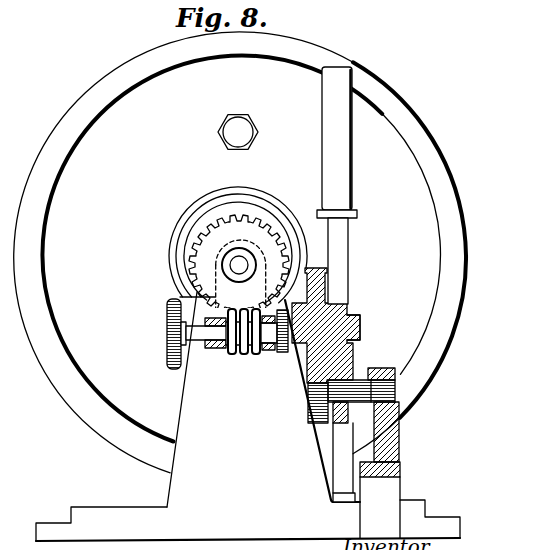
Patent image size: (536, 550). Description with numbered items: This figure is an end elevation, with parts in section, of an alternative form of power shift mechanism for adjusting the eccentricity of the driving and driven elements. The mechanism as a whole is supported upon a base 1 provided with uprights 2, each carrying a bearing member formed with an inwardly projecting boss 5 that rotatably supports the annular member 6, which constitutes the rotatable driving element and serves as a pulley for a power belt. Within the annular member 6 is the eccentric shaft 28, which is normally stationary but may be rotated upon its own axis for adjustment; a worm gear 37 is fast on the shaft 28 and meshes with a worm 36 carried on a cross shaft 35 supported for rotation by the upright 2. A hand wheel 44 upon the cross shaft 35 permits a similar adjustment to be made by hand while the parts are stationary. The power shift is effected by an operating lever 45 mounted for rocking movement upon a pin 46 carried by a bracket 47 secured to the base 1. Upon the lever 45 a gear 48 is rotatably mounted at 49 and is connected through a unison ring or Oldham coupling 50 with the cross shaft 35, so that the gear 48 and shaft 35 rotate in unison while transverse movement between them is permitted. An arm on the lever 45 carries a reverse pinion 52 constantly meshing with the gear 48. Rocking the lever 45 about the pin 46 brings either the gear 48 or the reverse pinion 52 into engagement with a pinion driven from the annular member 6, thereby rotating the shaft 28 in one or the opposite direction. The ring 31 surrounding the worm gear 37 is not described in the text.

The base 1 is at (122, 513).
The upright 2 is at (192, 420).
The boss 5 is at (255, 212).
The annular member 6 is at (402, 107).
The shaft 28 is at (239, 262).
The housing ring 31 is at (195, 218).
The cross shaft 35 is at (181, 346).
The worm 36 is at (235, 353).
The worm gear 37 is at (212, 269).
The hand wheel 44 is at (167, 318).
The lever 45 is at (345, 178).
The pin 46 is at (352, 382).
The bracket 47 is at (395, 458).
The gear 48 is at (328, 291).
The mounting 49 is at (362, 322).
The Oldham coupling 50 is at (282, 353).
The reverse pinion 52 is at (330, 425).